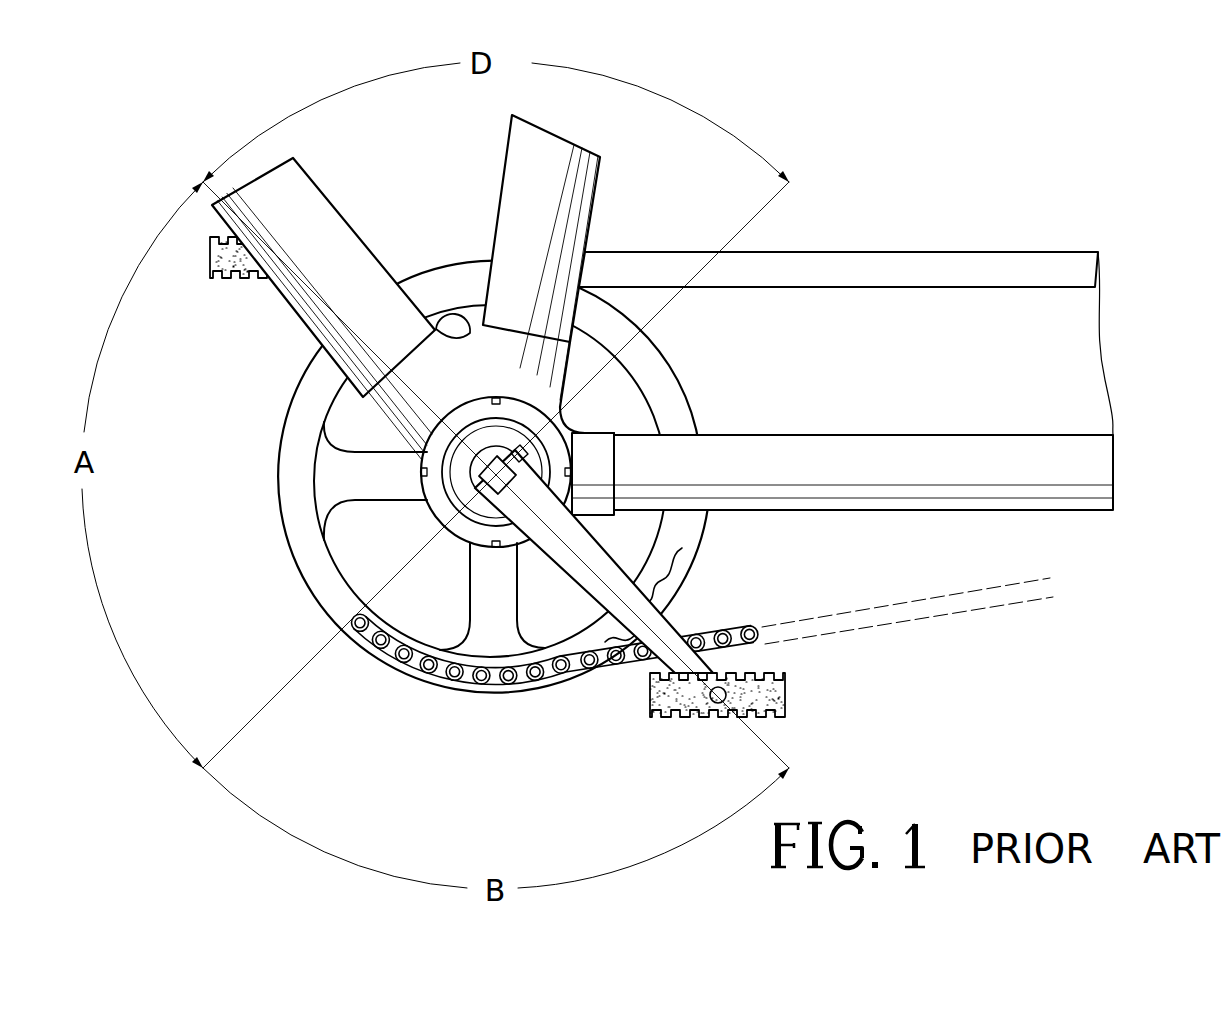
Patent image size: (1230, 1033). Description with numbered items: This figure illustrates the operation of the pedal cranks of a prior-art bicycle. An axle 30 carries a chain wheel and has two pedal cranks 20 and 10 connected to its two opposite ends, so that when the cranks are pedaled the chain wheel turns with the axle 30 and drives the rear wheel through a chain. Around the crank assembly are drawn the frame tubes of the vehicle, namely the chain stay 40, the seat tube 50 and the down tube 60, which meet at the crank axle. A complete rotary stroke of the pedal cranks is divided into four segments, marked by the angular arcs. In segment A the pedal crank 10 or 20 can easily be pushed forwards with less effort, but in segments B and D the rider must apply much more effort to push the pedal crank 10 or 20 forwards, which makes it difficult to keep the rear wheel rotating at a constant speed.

The pedal crank 10 is at (208, 250).
The pedal crank 20 is at (673, 638).
The axle 30 is at (473, 483).
The chain stay 40 is at (1072, 468).
The seat tube 50 is at (548, 187).
The down tube 60 is at (290, 200).